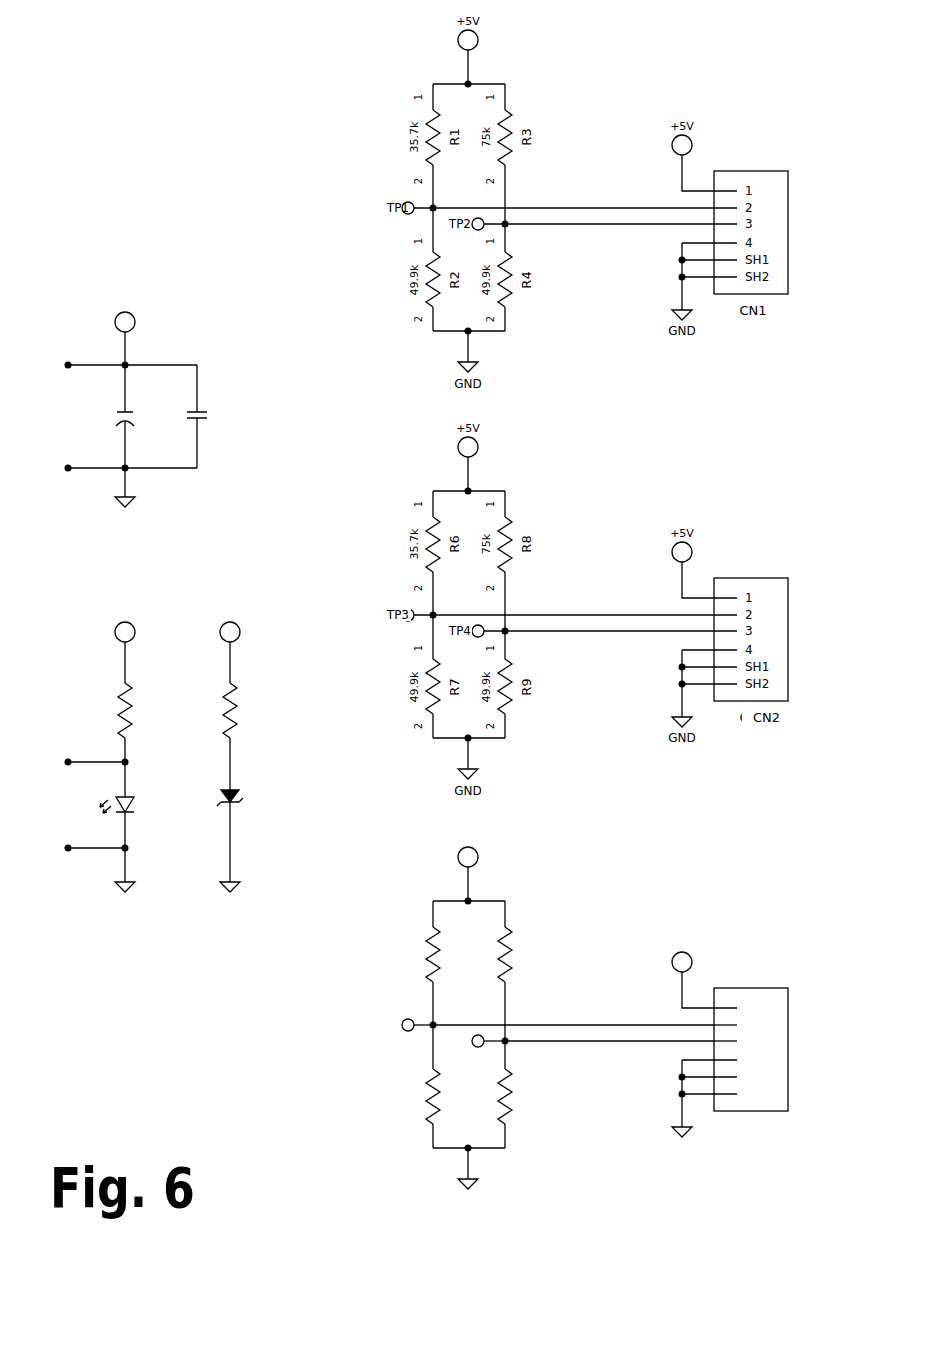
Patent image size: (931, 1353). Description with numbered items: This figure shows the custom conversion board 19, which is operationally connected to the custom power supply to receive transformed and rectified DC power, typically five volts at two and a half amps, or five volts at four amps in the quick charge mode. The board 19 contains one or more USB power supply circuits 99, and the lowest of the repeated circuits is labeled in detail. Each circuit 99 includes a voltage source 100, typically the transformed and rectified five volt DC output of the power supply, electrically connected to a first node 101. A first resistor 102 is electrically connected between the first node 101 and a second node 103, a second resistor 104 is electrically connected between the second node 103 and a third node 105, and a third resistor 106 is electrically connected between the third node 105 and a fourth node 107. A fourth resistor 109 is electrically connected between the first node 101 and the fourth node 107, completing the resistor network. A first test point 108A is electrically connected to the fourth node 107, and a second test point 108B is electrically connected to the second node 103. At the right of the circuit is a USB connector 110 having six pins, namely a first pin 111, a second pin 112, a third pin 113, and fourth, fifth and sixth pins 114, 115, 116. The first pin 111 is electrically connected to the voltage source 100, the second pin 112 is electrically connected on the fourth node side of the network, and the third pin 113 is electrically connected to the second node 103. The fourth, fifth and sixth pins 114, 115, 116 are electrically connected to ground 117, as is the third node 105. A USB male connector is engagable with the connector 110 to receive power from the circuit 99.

The custom conversion board 19 is at (148, 143).
The USB power supply circuit 99 is at (322, 1091).
The voltage source 100 is at (480, 857).
The first node 101 is at (472, 899).
The first resistor 102 is at (507, 929).
The second node 103 is at (507, 1044).
The second resistor 104 is at (507, 1117).
The third node 105 is at (472, 1149).
The third resistor 106 is at (428, 1117).
The fourth node 107 is at (431, 1029).
The first test point 108A is at (402, 1019).
The second test point 108B is at (482, 1036).
The fourth resistor 109 is at (428, 939).
The USB connector 110 is at (789, 1018).
The first pin 111 is at (712, 1008).
The second pin 112 is at (735, 1025).
The third pin 113 is at (735, 1058).
The fourth pin 114 is at (737, 1045).
The fifth pin 115 is at (737, 1076).
The sixth pin 116 is at (735, 1097).
The ground 117 is at (452, 1187).